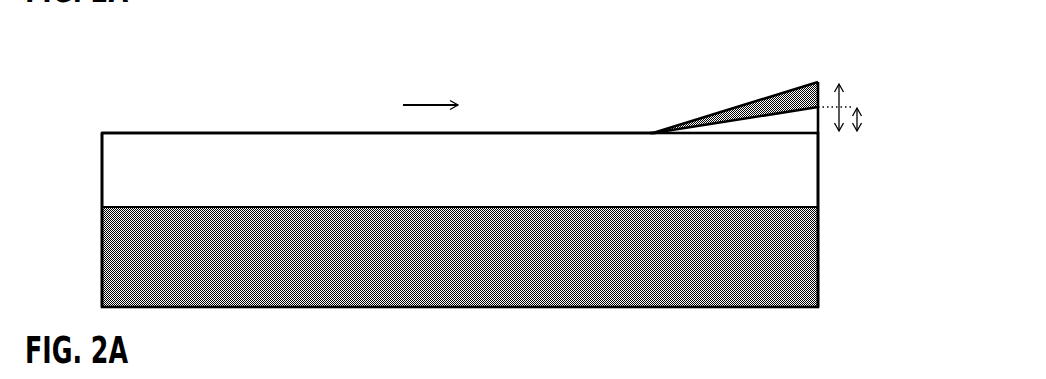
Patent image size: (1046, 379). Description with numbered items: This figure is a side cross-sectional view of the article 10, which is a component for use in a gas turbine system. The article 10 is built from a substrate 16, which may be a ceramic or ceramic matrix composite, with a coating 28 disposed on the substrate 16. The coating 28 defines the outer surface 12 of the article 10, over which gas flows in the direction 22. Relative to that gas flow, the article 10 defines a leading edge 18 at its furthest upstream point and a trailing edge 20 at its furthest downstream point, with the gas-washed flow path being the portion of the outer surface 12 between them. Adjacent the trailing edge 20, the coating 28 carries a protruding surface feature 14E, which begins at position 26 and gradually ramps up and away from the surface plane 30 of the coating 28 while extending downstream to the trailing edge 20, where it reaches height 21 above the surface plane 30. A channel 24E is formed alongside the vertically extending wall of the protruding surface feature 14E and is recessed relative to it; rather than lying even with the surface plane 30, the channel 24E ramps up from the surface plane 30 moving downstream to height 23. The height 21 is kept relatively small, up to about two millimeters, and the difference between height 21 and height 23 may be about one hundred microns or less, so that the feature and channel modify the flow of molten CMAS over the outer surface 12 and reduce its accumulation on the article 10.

The article 10 is at (227, 61).
The outer surface 12 is at (232, 130).
The protruding surface feature 14E is at (800, 98).
The substrate 16 is at (450, 264).
The leading edge 18 is at (90, 128).
The trailing edge 20 is at (833, 69).
The height 21 is at (840, 100).
The direction 22 is at (430, 91).
The height 23 is at (858, 117).
The channel 24E is at (765, 123).
The position 26 is at (652, 132).
The coating 28 is at (450, 191).
The surface plane 30 is at (779, 133).